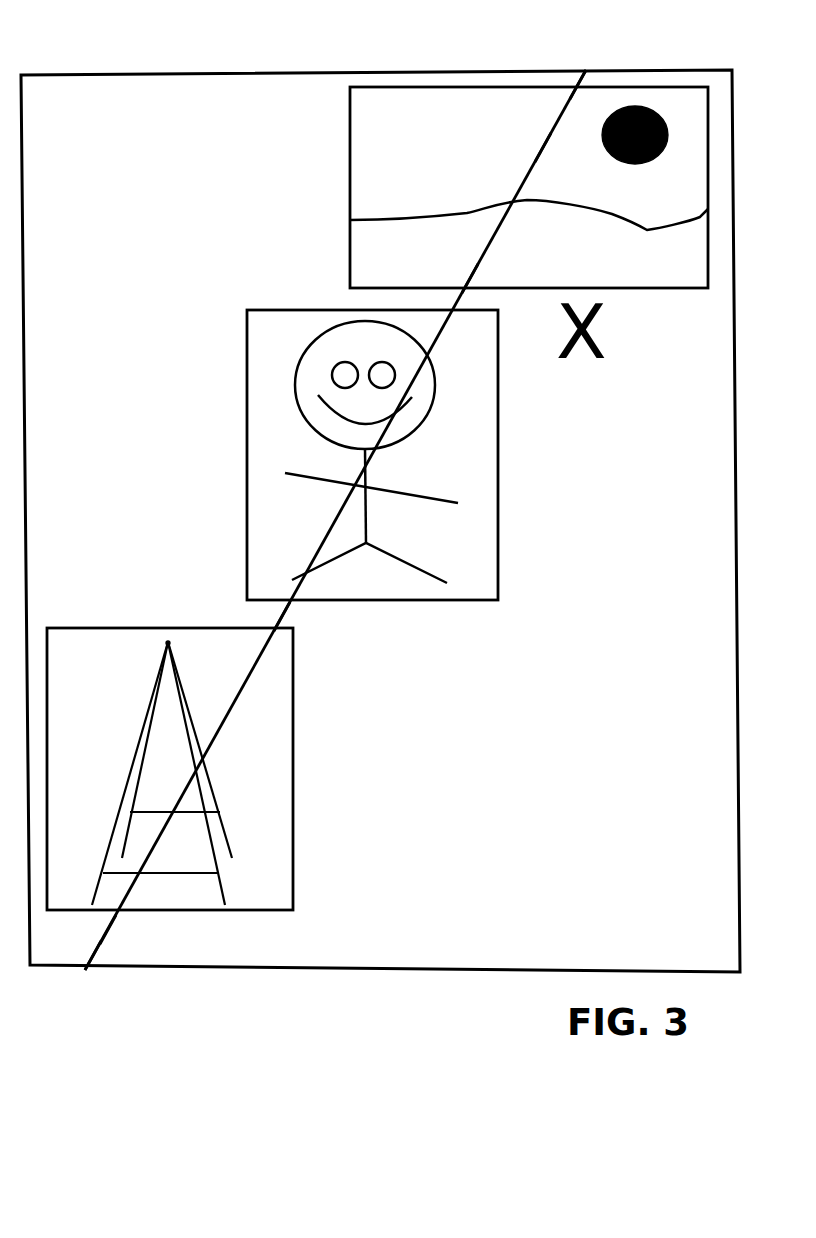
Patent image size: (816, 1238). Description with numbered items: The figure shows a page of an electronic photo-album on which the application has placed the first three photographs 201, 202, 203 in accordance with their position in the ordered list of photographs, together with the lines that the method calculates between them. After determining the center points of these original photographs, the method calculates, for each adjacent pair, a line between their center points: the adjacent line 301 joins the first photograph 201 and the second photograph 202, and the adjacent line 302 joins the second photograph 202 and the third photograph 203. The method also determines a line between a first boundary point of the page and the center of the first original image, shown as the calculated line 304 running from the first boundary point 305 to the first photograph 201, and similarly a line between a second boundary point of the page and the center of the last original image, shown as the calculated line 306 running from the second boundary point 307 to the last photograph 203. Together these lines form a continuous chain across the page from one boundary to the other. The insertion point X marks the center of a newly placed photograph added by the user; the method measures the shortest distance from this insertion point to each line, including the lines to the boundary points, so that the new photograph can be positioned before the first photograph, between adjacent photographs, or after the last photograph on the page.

The first photograph 201 is at (529, 187).
The second photograph 202 is at (372, 455).
The third photograph 203 is at (170, 769).
The adjacent line 301 is at (500, 265).
The adjacent line 302 is at (295, 615).
The calculated line 304 is at (525, 147).
The first boundary point 305 is at (584, 64).
The calculated line 306 is at (118, 938).
The second boundary point 307 is at (89, 980).